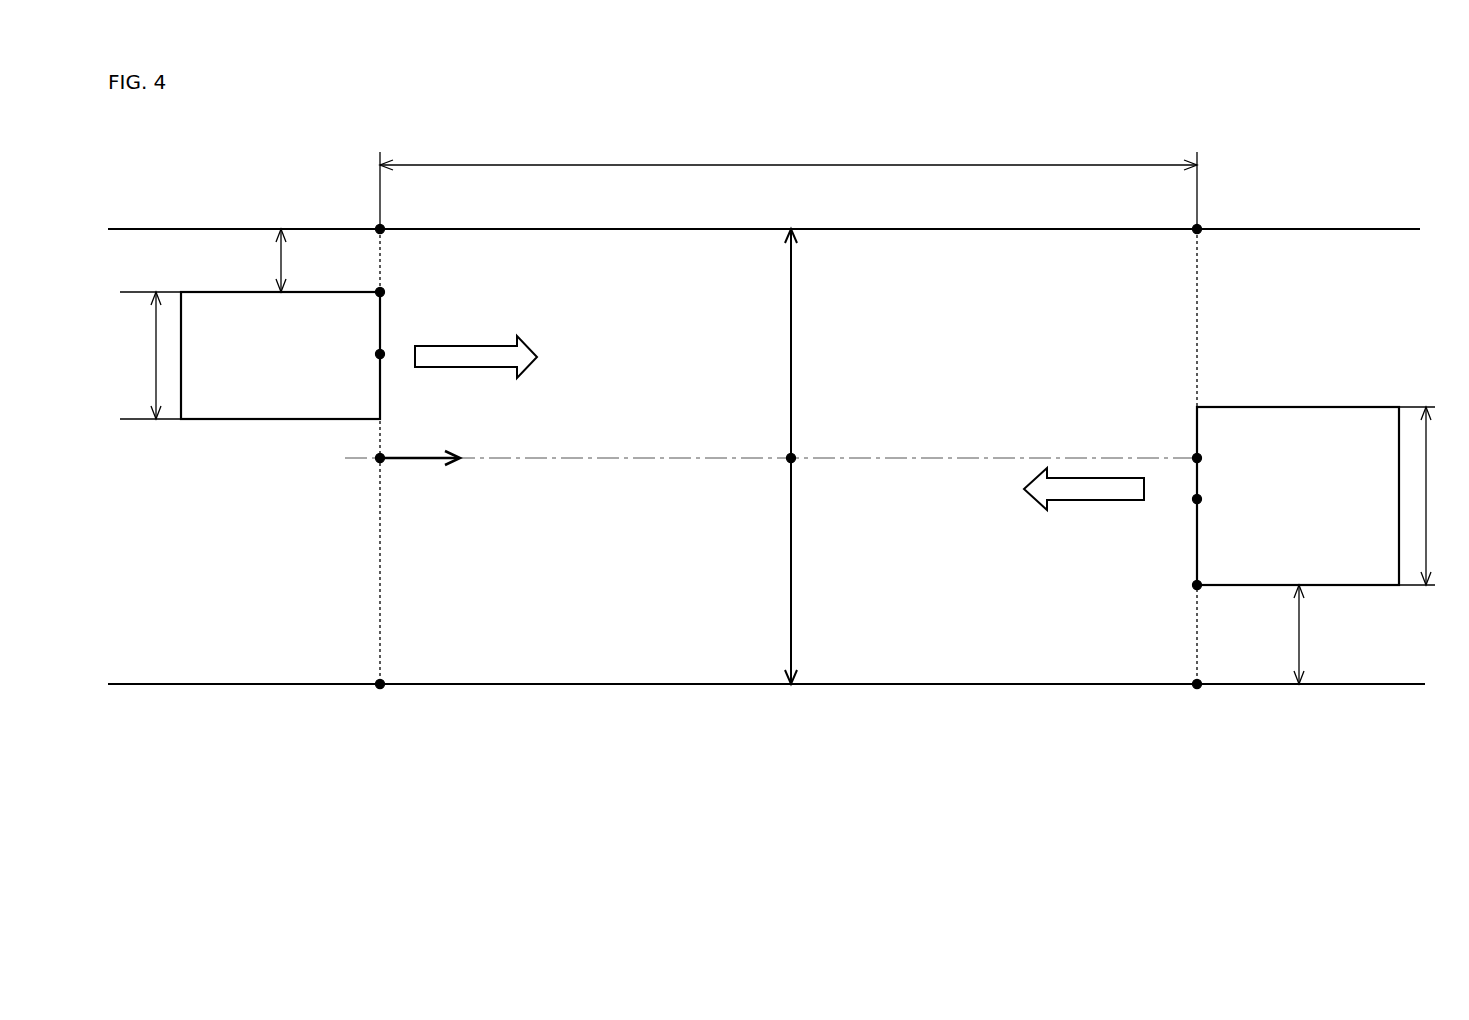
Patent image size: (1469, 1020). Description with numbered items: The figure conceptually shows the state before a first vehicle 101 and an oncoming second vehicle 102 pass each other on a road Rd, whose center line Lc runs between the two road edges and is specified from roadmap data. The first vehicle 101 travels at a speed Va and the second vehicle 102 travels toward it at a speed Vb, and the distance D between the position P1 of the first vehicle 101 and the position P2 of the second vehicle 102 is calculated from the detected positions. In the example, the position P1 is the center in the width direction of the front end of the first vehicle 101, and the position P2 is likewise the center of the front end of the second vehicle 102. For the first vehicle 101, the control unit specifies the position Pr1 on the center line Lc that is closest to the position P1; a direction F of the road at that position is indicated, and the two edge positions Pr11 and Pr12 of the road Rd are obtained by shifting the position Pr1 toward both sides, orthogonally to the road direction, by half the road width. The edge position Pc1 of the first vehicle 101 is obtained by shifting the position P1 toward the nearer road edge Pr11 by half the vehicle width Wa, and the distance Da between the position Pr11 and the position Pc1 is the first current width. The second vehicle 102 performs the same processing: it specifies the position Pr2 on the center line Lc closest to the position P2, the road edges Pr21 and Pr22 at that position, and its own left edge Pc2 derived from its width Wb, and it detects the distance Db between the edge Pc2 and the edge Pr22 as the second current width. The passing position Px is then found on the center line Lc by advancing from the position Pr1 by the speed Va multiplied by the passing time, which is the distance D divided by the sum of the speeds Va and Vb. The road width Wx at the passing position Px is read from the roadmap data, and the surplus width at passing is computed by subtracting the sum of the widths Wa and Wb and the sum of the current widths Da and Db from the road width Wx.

The first vehicle 101 is at (258, 421).
The second vehicle 102 is at (1310, 406).
The road Rd is at (602, 665).
The center line Lc is at (642, 460).
The distance D is at (788, 156).
The first current width Da is at (264, 260).
The second current width Db is at (1316, 634).
The width of the first vehicle Wa is at (149, 355).
The width of the second vehicle Wb is at (1433, 496).
The road width at the passing position Wx is at (777, 456).
The speed of the first vehicle Va is at (476, 349).
The speed of the second vehicle Vb is at (1084, 483).
The force / direction vector F is at (430, 463).
The edge position of the road Pr11 is at (380, 229).
The edge position of the road Pr12 is at (378, 688).
The edge of the road Pr21 is at (1197, 229).
The edge of the road Pr22 is at (1196, 688).
The position on the center line Pr1 is at (380, 460).
The position on the center line Pr2 is at (1197, 458).
The edge position of the first vehicle Pc1 is at (380, 292).
The left edge of the second vehicle Pc2 is at (1197, 585).
The position of the first vehicle P1 is at (380, 354).
The position of the second vehicle P2 is at (1197, 499).
The passing position Px is at (791, 460).